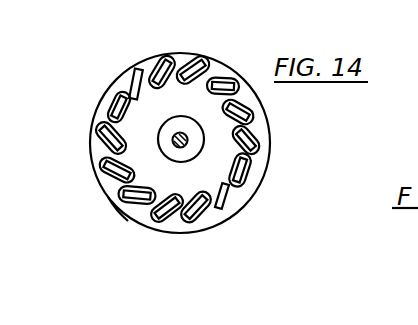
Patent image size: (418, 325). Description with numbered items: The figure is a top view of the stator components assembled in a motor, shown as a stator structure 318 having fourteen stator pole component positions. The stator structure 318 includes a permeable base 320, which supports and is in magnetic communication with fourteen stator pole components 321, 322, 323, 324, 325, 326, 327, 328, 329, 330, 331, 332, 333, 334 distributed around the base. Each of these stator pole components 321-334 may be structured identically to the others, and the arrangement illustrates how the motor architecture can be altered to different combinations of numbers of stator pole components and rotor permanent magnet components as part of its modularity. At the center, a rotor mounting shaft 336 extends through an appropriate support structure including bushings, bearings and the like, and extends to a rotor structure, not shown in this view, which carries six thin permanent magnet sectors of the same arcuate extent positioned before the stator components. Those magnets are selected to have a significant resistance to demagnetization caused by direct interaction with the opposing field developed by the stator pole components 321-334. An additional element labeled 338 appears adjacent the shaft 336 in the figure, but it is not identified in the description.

The stator structure 318 is at (122, 230).
The permeable base 320 is at (106, 193).
The stator pole component 321 is at (92, 160).
The stator pole component 322 is at (93, 120).
The stator pole component 323 is at (107, 88).
The stator pole component 324 is at (137, 67).
The stator pole component 325 is at (172, 52).
The stator pole component 326 is at (214, 24).
The stator pole component 327 is at (231, 66).
The stator pole component 328 is at (264, 106).
The stator pole component 329 is at (269, 143).
The stator pole component 330 is at (260, 182).
The stator pole component 331 is at (228, 204).
The stator pole component 332 is at (200, 230).
The stator pole component 333 is at (152, 230).
The stator pole component 334 is at (118, 210).
The rotor mounting shaft 336 is at (184, 132).
The shaft 338 is at (165, 157).